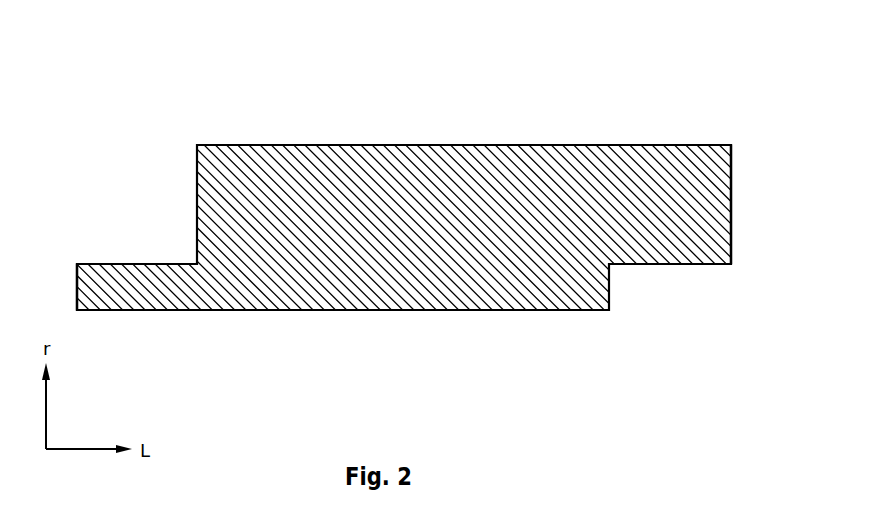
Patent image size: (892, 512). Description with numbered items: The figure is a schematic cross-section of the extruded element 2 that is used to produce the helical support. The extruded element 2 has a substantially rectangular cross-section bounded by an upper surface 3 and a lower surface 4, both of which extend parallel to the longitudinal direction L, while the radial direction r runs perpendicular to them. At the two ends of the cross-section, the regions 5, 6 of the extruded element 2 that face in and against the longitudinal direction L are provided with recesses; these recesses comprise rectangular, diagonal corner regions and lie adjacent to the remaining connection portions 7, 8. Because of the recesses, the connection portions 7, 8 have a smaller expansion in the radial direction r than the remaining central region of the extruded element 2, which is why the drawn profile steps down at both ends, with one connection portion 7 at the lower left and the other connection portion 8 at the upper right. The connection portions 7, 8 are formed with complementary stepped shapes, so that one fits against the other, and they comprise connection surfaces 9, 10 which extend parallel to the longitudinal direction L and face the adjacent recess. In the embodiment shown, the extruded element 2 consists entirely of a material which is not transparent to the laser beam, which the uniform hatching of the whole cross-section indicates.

The extruded element 2 is at (476, 77).
The upper surface 3 is at (465, 145).
The lower surface 4 is at (442, 310).
The region facing in the longitudinal direction 5 is at (187, 326).
The region facing against the longitudinal direction 6 is at (680, 134).
The connection portion 7 is at (77, 287).
The connection portion 8 is at (731, 190).
The connection surface 9 is at (137, 264).
The connection surface 10 is at (670, 264).